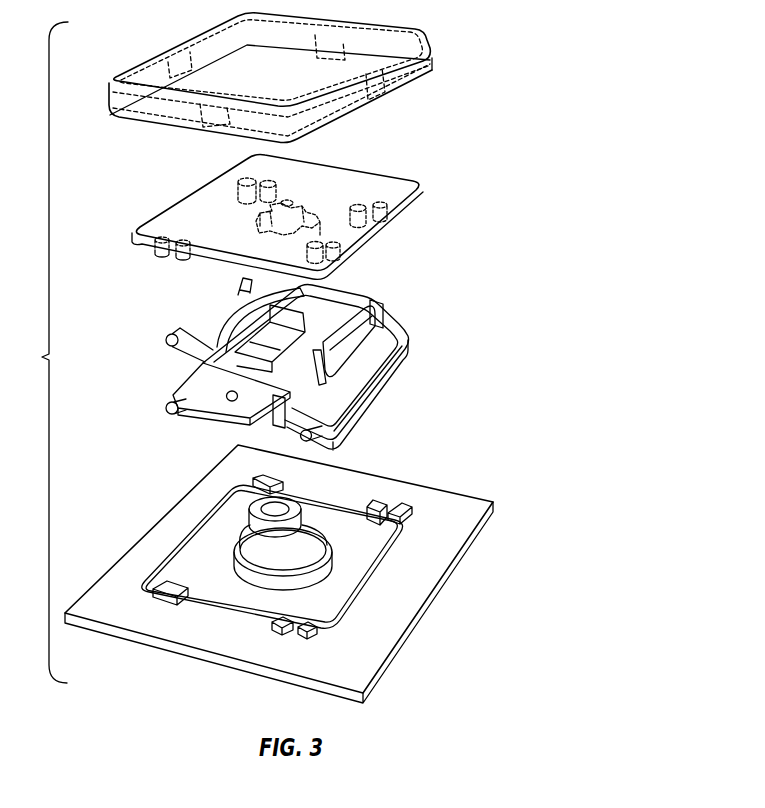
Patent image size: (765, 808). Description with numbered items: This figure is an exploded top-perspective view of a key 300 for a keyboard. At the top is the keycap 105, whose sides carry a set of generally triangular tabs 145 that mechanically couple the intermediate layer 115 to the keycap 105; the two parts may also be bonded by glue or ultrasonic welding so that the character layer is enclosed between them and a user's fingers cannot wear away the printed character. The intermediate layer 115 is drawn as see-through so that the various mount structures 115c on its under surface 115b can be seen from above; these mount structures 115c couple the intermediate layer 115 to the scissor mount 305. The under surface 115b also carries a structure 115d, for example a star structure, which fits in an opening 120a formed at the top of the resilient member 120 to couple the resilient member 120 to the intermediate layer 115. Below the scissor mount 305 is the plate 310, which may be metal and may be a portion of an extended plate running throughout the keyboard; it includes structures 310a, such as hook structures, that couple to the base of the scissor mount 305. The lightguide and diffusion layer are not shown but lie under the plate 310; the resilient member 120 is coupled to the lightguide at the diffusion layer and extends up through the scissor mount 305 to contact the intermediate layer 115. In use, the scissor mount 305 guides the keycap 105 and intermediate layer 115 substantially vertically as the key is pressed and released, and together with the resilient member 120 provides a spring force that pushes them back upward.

The key 300 is at (39, 352).
The keycap 105 is at (293, 75).
The tabs 145 is at (382, 97).
The intermediate layer 115 is at (306, 233).
The under surface 115b is at (202, 265).
The mount structures 115c is at (402, 217).
The star structure 115d is at (328, 227).
The scissor mount 305 is at (410, 350).
The plate 310 is at (302, 574).
The hook structures 310a is at (253, 482).
The resilient member 120 is at (320, 522).
The opening 120a is at (281, 506).